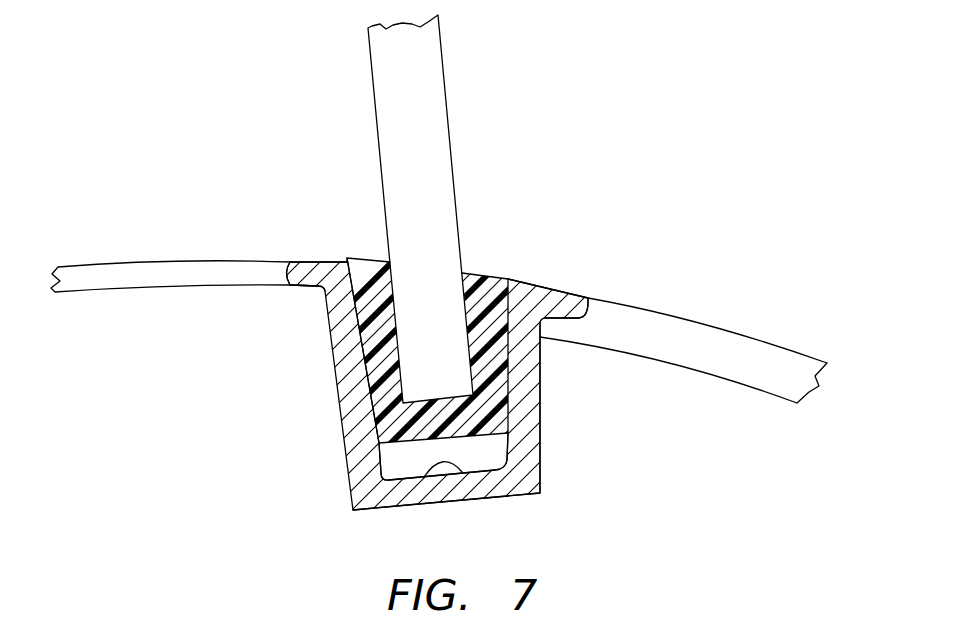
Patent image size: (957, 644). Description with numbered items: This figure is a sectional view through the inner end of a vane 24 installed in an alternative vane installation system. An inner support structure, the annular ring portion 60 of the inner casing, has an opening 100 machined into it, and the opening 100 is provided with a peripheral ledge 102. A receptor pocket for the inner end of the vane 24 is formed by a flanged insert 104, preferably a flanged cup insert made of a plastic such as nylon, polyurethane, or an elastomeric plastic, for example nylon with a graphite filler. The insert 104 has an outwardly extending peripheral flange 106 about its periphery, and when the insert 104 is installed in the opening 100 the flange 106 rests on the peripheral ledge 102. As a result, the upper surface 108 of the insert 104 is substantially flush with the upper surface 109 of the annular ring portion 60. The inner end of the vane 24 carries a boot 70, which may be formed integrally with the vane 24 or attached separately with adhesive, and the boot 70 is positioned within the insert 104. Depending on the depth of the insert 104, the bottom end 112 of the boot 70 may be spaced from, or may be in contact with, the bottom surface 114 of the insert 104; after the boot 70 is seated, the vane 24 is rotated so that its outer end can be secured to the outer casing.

The vane 24 is at (433, 88).
The annular ring portion 60 is at (668, 327).
The boot 70 is at (363, 257).
The opening 100 is at (545, 355).
The peripheral ledge 102 is at (298, 287).
The flanged insert 104 is at (343, 395).
The peripheral flange 106 is at (560, 295).
The upper surface of the insert 108 is at (310, 262).
The upper surface of the annular ring portion 109 is at (145, 260).
The bottom end of the boot 112 is at (487, 433).
The bottom surface of the insert 114 is at (430, 463).